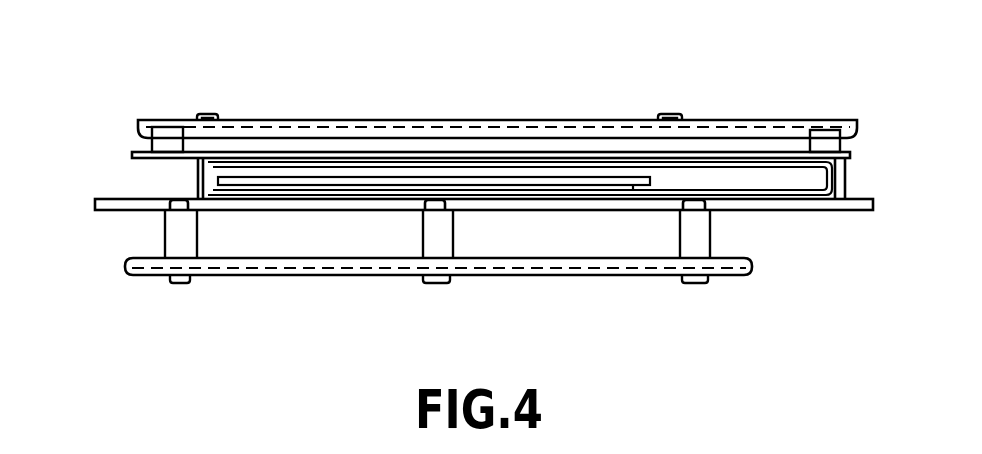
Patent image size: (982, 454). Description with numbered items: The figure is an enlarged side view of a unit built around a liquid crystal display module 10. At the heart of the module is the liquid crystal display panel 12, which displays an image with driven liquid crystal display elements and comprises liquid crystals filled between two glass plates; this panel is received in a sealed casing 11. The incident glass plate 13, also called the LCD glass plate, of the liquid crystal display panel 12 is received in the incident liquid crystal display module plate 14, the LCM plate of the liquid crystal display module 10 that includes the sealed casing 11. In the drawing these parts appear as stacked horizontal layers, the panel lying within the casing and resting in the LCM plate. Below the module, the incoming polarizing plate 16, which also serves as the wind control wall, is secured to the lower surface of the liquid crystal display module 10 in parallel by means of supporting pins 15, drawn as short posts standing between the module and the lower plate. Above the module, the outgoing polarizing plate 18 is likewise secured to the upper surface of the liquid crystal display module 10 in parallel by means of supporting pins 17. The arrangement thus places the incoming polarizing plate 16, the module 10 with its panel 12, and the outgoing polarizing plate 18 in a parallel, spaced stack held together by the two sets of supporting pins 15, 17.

The liquid crystal display module 10 is at (128, 211).
The sealed casing 11 is at (707, 175).
The liquid crystal display panel 12 is at (406, 166).
The incident glass plate 13 is at (295, 195).
The incident liquid crystal display module plate 14 is at (787, 212).
The supporting pins 15 is at (182, 248).
The incoming polarizing plate 16 is at (578, 265).
The supporting pins 17 is at (167, 142).
The outgoing polarizing plate 18 is at (512, 122).